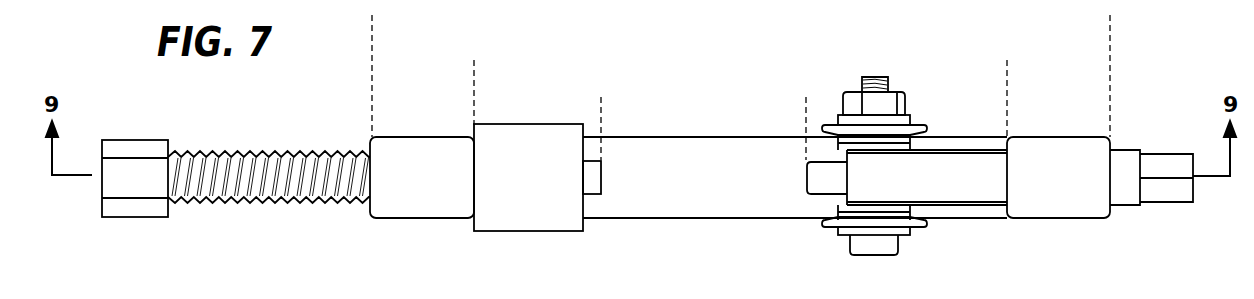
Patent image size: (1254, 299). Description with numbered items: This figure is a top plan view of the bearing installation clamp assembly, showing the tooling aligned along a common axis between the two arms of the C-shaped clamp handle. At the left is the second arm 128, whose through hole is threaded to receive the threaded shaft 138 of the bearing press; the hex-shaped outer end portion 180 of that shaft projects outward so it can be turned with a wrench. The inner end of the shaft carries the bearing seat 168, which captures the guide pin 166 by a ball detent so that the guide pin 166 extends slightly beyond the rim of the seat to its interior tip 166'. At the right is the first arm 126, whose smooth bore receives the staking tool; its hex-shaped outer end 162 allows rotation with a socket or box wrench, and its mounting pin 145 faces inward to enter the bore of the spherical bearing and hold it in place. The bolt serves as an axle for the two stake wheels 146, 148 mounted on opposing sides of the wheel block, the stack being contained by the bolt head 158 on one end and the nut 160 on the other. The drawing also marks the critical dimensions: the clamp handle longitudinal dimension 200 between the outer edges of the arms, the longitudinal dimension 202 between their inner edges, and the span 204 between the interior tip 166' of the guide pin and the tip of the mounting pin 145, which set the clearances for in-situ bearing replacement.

The first arm 126 is at (1027, 137).
The second arm 128 is at (433, 190).
The threaded shaft 138 is at (336, 150).
The mounting pin 145 is at (818, 176).
The stake wheel 146 is at (925, 226).
The stake wheel 148 is at (925, 130).
The bolt head 158 is at (898, 245).
The nut 160 is at (905, 105).
The outer end 162 is at (1152, 155).
The guide pin 166 is at (568, 210).
The interior tip of the guide pin 166' is at (638, 214).
The bearing seat 168 is at (535, 190).
The outer end portion 180 is at (123, 140).
The clamp handle longitudinal dimension 200 is at (1108, 23).
The longitudinal dimension 202 is at (1005, 66).
The span 204 is at (804, 108).